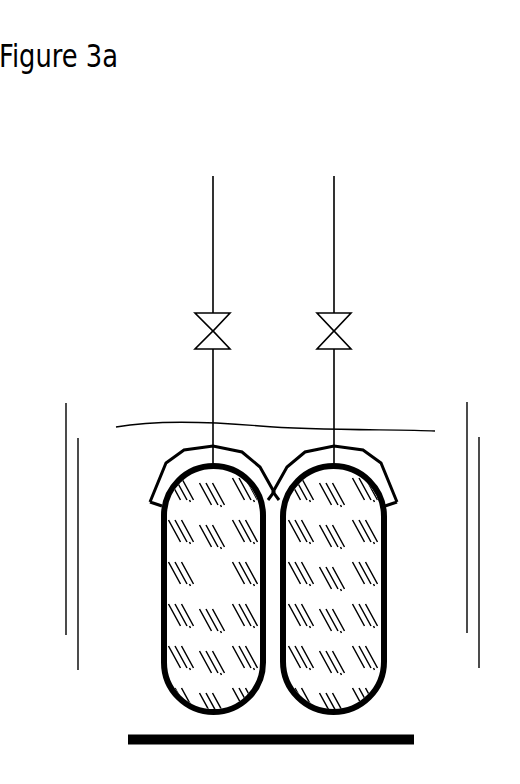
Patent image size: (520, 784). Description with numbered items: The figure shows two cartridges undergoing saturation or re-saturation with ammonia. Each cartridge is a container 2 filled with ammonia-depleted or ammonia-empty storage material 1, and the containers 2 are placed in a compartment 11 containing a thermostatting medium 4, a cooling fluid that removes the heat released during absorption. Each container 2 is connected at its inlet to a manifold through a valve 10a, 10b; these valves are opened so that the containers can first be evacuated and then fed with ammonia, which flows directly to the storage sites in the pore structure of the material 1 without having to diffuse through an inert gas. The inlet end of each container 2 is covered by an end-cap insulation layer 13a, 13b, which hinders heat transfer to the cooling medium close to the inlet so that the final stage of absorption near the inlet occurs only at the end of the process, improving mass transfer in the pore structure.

The ammonia storage material 1 is at (213, 597).
The container 2 is at (241, 703).
The thermostatting medium 4 is at (355, 591).
The valve 10a is at (188, 321).
The valve 10b is at (315, 321).
The compartment 11 is at (287, 738).
The end-cap insulation layer 13a is at (195, 476).
The end-cap insulation layer 13b is at (340, 476).